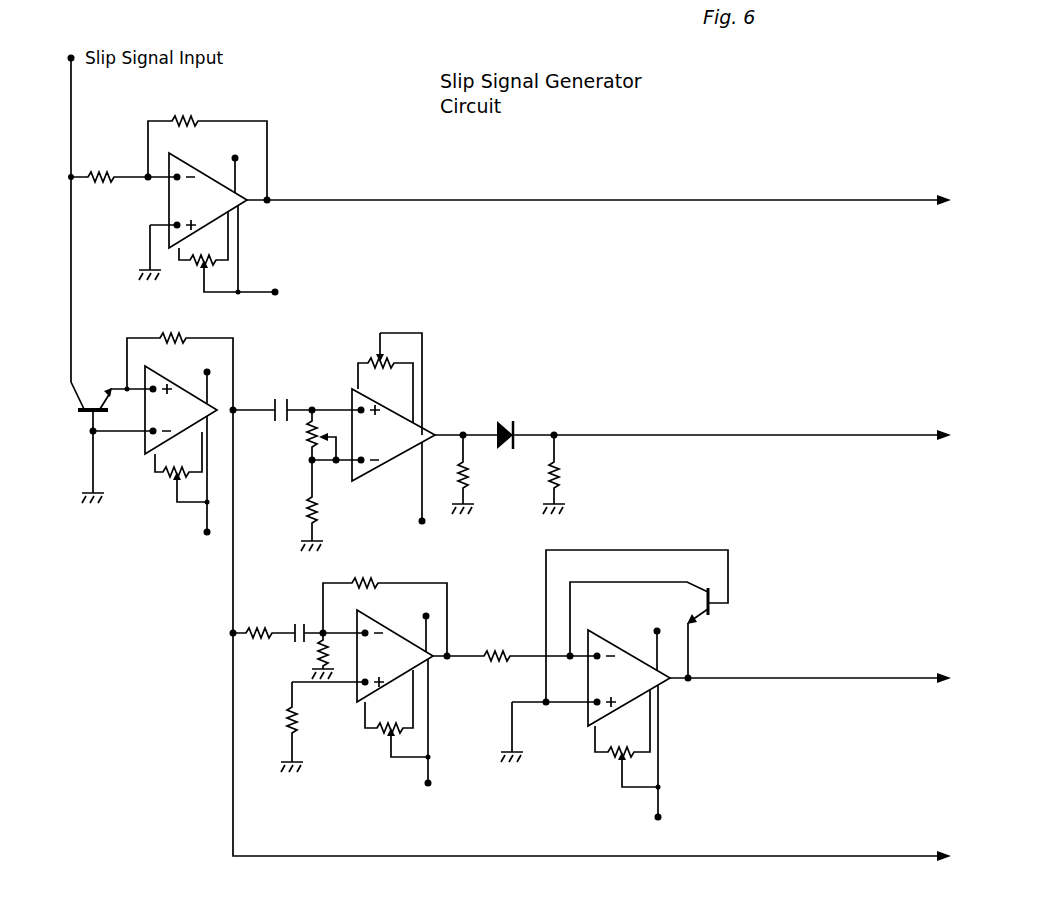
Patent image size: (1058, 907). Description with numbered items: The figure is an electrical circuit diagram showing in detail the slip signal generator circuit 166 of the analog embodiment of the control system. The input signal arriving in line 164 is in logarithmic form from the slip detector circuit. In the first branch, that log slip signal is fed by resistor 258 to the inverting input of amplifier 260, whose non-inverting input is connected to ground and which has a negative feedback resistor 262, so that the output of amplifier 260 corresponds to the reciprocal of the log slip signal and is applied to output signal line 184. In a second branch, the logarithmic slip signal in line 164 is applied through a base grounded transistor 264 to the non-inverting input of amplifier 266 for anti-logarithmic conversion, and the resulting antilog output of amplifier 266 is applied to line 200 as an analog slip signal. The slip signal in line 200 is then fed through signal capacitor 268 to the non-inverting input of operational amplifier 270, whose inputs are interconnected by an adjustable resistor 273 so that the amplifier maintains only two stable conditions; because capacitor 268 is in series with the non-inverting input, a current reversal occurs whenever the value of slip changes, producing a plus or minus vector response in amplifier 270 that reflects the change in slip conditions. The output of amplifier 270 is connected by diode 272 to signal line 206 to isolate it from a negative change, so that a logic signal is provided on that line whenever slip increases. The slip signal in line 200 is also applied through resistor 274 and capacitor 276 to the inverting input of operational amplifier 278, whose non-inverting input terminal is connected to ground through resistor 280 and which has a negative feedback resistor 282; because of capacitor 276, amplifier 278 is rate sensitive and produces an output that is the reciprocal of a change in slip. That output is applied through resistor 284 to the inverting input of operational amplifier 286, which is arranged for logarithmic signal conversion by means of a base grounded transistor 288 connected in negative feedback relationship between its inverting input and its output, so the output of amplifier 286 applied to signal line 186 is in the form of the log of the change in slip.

The input signal line 164 is at (72, 97).
The slip signal generator circuit 166 is at (280, 184).
The output signal line 184 is at (632, 202).
The signal line 186 is at (852, 679).
The line 200 is at (552, 852).
The signal line 206 is at (865, 435).
The resistor 258 is at (103, 189).
The amplifier 260 is at (212, 212).
The negative feedback resistor 262 is at (192, 117).
The base grounded transistor 264 is at (82, 393).
The amplifier 266 is at (180, 420).
The signal capacitor 268 is at (288, 399).
The operational amplifier 270 is at (390, 422).
The diode 272 is at (500, 427).
The adjustable resistor 273 is at (318, 437).
The resistor 274 is at (260, 640).
The capacitor 276 is at (292, 624).
The operational amplifier 278 is at (407, 665).
The resistor 280 is at (287, 718).
The negative feedback resistor 282 is at (378, 580).
The resistor 284 is at (500, 648).
The operational amplifier 286 is at (630, 688).
The base grounded transistor 288 is at (715, 611).